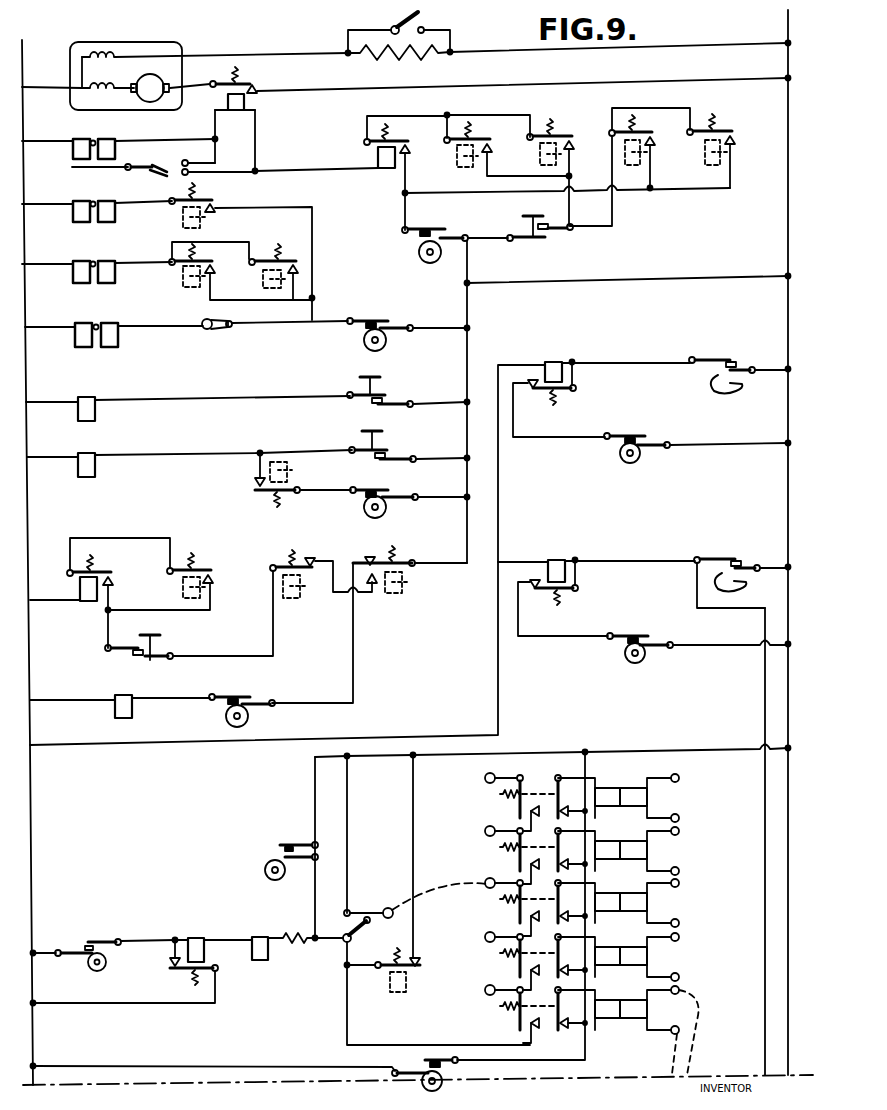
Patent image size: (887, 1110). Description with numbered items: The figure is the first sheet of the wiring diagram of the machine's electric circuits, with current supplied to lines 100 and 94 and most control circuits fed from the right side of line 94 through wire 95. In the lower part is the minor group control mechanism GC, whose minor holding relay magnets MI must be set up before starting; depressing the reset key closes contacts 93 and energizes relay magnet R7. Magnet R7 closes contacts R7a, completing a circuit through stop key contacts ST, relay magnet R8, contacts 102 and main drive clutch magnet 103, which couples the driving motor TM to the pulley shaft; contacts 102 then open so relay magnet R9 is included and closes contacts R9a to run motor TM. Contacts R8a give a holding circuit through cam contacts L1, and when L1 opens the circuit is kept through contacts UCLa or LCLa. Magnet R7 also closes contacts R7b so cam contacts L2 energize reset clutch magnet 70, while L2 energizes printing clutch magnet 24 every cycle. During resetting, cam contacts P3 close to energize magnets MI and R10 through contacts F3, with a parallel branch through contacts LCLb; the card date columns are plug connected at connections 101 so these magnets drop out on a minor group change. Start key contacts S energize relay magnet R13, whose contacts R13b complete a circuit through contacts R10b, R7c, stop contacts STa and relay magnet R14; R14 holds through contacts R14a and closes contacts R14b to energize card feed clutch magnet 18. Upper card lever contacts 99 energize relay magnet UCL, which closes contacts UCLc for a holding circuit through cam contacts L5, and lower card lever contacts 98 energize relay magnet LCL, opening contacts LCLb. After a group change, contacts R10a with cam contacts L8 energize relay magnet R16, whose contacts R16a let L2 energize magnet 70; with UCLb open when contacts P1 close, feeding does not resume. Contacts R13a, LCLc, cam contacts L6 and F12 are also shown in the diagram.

The line 100 is at (25, 302).
The line 94 is at (788, 212).
The wire 95 is at (648, 282).
The contacts 102 is at (170, 164).
The main drive clutch magnet 103 is at (58, 153).
The card feed clutch magnet 18 is at (52, 228).
The reset clutch magnet 70 is at (55, 278).
The printing clutch magnet 24 is at (60, 352).
The reset key contacts 93 is at (428, 390).
The upper card lever contacts 99 is at (730, 362).
The lower card lever contacts 98 is at (738, 562).
The plug connections 101 is at (690, 1050).
The driving motor TM is at (102, 76).
The relay magnet R9 is at (245, 100).
The relay contacts R9a is at (263, 88).
The relay magnet R8 is at (378, 156).
The relay contacts R8a is at (407, 136).
The relay magnet R7 is at (263, 284).
The relay contacts R7a is at (486, 135).
The relay contacts R7b is at (296, 262).
The relay contacts R7c is at (312, 558).
The relay magnet R13 is at (95, 465).
The relay contacts R13a is at (573, 136).
The relay contacts R13b is at (212, 570).
The relay magnet R14 is at (183, 222).
The relay contacts R14a is at (110, 572).
The relay contacts R14b is at (215, 207).
The relay magnet R16 is at (183, 280).
The relay contacts R16a is at (218, 267).
The relay magnet R10 is at (402, 586).
The relay contacts R10a is at (370, 557).
The relay contacts R10b is at (374, 585).
The upper card lever relay magnet UCL is at (625, 159).
The relay contacts UCLa is at (652, 134).
The relay contacts UCLb is at (255, 484).
The relay contacts UCLc is at (537, 384).
The lower card lever relay magnet LCL is at (705, 159).
The relay contacts LCLa is at (732, 134).
The relay contacts LCLb is at (422, 965).
The relay contacts LCLc is at (538, 587).
The cam contacts L1 is at (441, 231).
The cam contacts L2 is at (388, 322).
The cam contacts L5 is at (660, 445).
The cam contacts L6 is at (660, 645).
The cam contacts L8 is at (272, 700).
The stop key contacts ST is at (568, 244).
The stop key contacts STa is at (124, 648).
The start key contacts S is at (430, 445).
The cam contacts P1 is at (398, 492).
The cam contacts P3 is at (82, 943).
The cam contacts F3 is at (293, 843).
The cam contacts F12 is at (408, 1057).
The minor holding relay magnet MI is at (196, 938).
The minor group control mechanism GC is at (422, 900).